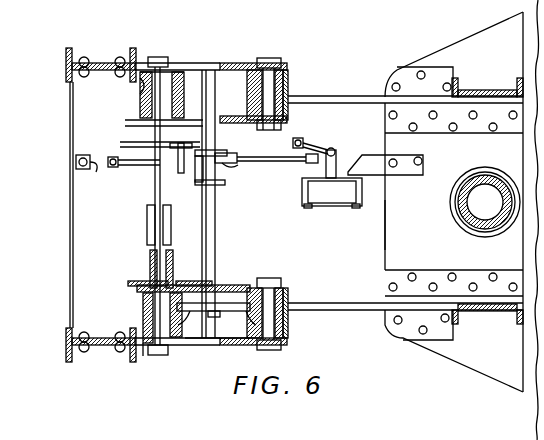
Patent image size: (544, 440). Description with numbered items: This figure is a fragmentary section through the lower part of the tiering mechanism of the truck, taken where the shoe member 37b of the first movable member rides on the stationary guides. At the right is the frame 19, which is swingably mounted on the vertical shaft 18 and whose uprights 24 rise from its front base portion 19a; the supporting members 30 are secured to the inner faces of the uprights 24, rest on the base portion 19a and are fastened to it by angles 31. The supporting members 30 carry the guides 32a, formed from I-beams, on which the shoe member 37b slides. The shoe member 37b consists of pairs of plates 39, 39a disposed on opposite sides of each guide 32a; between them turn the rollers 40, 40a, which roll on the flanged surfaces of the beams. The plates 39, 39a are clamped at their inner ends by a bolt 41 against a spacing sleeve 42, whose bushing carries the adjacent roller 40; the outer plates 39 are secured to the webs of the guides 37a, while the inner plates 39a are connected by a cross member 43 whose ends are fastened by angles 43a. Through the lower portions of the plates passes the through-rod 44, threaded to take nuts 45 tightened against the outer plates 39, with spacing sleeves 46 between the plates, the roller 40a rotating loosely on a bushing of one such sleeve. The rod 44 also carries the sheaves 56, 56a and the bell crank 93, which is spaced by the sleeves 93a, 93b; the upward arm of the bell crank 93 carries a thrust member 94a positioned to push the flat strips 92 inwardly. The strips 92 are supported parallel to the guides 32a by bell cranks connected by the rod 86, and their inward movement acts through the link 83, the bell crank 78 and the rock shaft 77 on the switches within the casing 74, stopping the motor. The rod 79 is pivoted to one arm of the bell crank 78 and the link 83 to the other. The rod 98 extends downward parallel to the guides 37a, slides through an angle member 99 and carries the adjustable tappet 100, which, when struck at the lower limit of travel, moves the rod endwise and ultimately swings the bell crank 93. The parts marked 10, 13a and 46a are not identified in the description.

The machine frame 10 is at (535, 220).
The lever arm 13a is at (300, 190).
The vertical shaft 18 is at (482, 170).
The frame 19 is at (454, 202).
The front base portion 19a is at (384, 246).
The uprights 24 is at (472, 90).
The supporting members 30 is at (356, 92).
The angles 31 is at (402, 78).
The guides 32a is at (232, 72).
The guides 37a is at (75, 56).
The shoe member 37b is at (217, 351).
The plates 39 is at (202, 63).
The plates 39a is at (257, 123).
The rollers 40 is at (289, 96).
The rollers 40a is at (139, 96).
The bolt 41 is at (270, 58).
The spacing sleeve 42 is at (284, 78).
The cross member 43 is at (154, 230).
The angles 43a is at (140, 84).
The through-rod 44 is at (149, 258).
The nuts 45 is at (172, 56).
The spacing sleeves 46 is at (180, 324).
The bracket lug 46a is at (146, 348).
The sheave 56 is at (126, 134).
The sheave 56a is at (128, 280).
The casing 74 is at (332, 206).
The rock shaft 77 is at (336, 152).
The bell crank 78 is at (310, 144).
The rod 79 is at (300, 136).
The link 83 is at (274, 163).
The rod 86 is at (208, 230).
The flat strips 92 is at (196, 182).
The bell crank 93 is at (134, 167).
The sleeve 93a is at (148, 220).
The sleeve 93b is at (145, 150).
The thrust member 94a is at (222, 150).
The rod 98 is at (78, 170).
The angle member 99 is at (92, 180).
The adjustable tappet 100 is at (76, 162).